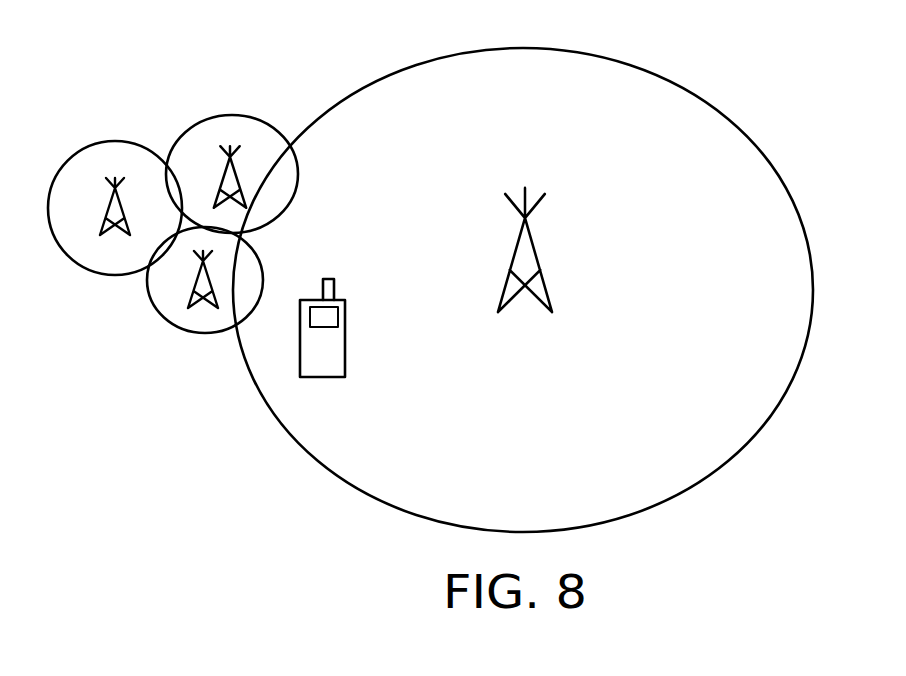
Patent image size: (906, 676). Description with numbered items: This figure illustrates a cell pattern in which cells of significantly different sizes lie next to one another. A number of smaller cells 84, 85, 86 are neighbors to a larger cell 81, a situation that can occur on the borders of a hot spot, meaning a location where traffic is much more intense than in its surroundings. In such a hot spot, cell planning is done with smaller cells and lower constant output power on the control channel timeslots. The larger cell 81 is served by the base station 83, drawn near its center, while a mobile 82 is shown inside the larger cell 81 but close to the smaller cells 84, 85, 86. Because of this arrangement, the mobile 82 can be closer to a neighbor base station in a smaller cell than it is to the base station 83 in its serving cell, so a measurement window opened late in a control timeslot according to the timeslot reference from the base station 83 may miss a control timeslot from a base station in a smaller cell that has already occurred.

The larger cell 81 is at (523, 290).
The mobile 82 is at (345, 328).
The base station 83 is at (544, 250).
The smaller cell 84 is at (197, 292).
The smaller cell 85 is at (115, 194).
The smaller cell 86 is at (232, 157).